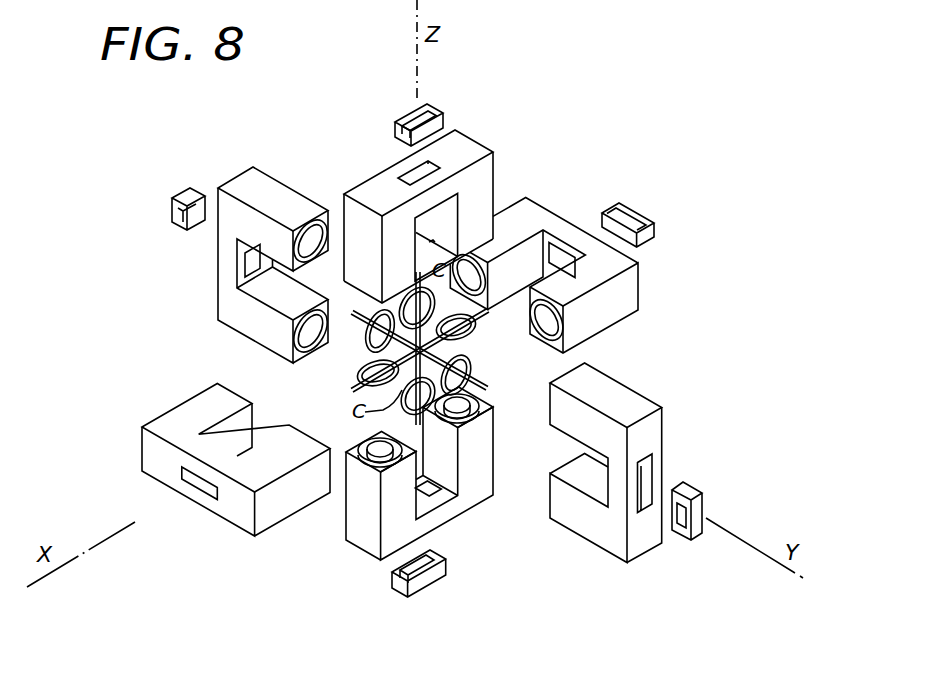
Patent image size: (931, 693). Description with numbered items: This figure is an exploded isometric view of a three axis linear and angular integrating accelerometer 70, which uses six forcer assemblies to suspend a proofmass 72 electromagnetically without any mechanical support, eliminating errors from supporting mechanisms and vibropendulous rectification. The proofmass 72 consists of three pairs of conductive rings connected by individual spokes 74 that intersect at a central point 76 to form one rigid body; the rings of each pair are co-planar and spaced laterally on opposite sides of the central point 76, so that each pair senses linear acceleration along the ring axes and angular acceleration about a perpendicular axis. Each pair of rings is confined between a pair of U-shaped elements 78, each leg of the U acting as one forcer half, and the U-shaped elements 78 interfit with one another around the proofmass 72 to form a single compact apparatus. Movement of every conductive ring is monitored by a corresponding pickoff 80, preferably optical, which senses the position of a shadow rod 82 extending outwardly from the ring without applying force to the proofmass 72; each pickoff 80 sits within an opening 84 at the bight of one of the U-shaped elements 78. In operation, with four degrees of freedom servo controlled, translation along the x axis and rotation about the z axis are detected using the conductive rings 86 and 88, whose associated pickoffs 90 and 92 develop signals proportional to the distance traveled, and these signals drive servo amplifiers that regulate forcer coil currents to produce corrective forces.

The three axis linear and angular integrating accelerometer 70 is at (587, 158).
The proofmass 72 is at (478, 328).
The spokes 74 is at (448, 352).
The central point 76 is at (395, 355).
The U-shaped elements 78 is at (522, 213).
The pickoff 80 is at (430, 107).
The shadow rod 82 is at (364, 313).
The opening 84 is at (412, 178).
The conductive ring 86 is at (371, 340).
The conductive ring 88 is at (475, 362).
The pickoff 90 is at (172, 212).
The pickoff 92 is at (698, 505).